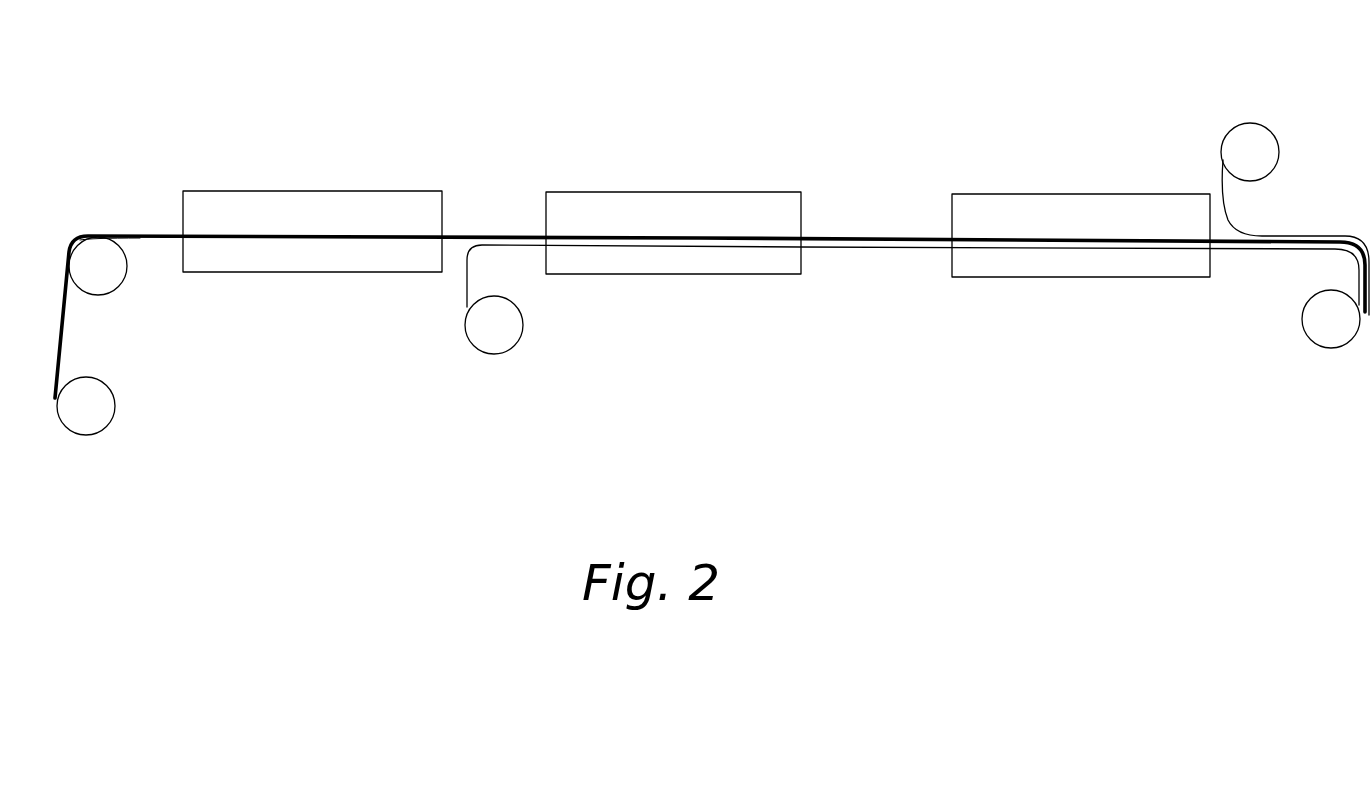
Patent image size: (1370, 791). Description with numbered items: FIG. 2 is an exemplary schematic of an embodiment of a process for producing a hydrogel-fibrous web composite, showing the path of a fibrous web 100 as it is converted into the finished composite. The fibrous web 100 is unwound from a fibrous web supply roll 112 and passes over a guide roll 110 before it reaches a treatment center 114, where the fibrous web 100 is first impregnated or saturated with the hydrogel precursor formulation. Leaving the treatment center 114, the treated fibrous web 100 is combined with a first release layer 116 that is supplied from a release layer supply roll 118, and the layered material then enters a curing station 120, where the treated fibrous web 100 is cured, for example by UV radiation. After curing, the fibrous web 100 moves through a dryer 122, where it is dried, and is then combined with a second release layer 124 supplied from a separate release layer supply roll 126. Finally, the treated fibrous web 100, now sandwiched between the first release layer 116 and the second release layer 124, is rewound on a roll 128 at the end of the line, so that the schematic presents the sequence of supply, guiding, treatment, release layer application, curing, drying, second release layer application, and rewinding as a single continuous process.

The fibrous web 100 is at (125, 214).
The guide roll 110 is at (93, 281).
The fibrous web supply roll 112 is at (85, 418).
The treatment center 114 is at (284, 176).
The first release layer 116 is at (467, 298).
The release layer supply roll 118 is at (503, 332).
The curing station 120 is at (662, 178).
The dryer 122 is at (1054, 180).
The second release layer 124 is at (1230, 217).
The release layer supply roll 126 is at (1252, 152).
The roll 128 is at (1328, 325).